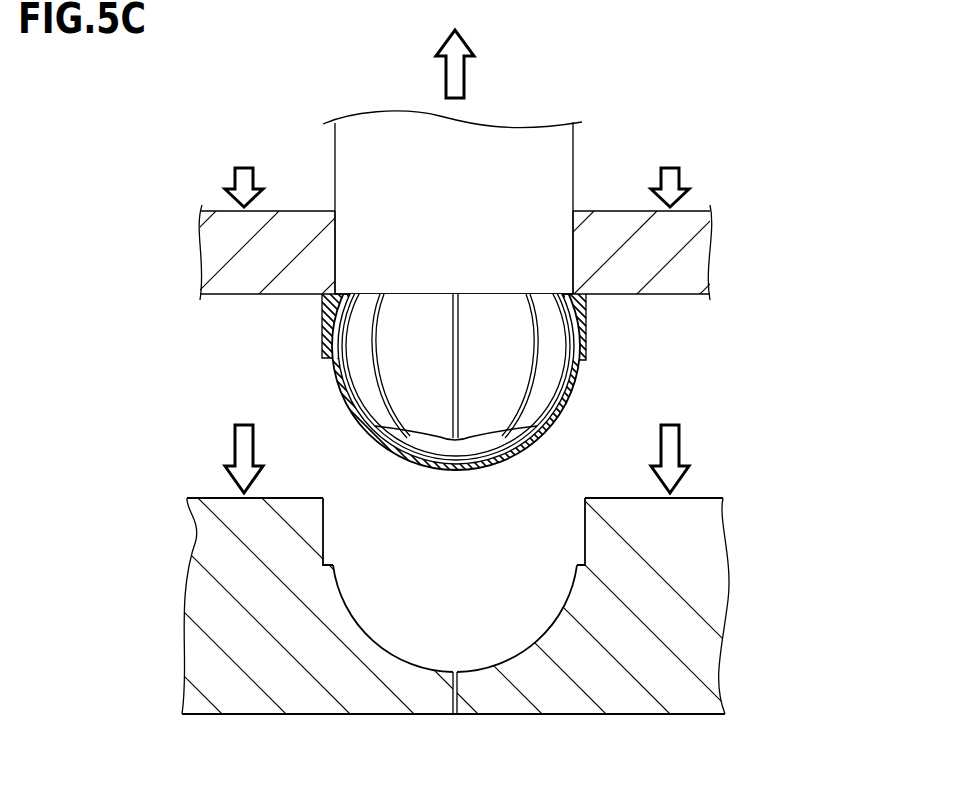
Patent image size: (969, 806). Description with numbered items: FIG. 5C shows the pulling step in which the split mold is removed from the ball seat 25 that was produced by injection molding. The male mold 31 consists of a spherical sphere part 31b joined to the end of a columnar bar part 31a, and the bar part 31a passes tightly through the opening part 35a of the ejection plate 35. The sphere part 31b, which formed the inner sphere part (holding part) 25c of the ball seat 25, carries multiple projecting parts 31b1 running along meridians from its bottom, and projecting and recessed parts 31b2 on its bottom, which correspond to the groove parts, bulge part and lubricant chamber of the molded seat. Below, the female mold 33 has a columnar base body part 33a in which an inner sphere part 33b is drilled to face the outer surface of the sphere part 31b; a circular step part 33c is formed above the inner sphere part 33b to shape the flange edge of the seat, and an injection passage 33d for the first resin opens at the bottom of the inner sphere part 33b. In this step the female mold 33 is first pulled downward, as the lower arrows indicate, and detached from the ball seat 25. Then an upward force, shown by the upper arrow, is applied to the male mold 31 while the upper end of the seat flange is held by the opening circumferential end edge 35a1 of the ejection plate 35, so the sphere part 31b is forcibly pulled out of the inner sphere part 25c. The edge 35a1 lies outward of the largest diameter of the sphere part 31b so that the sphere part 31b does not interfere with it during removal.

The male mold 31 is at (578, 147).
The columnar bar part 31a is at (365, 166).
The sphere part 31b is at (483, 363).
The projecting parts 31b1 is at (455, 385).
The projecting and recessed parts 31b2 is at (465, 446).
The ball seat 25 is at (323, 349).
The inner sphere part (holding part) 25c is at (557, 392).
The female mold 33 is at (705, 585).
The base body part 33a is at (695, 655).
The inner sphere part 33b is at (535, 645).
The circular step part 33c is at (575, 568).
The injection passage 33d is at (449, 712).
The ejection plate 35 is at (705, 243).
The opening part 35a is at (575, 243).
The opening circumferential end edge 35a1 is at (325, 308).